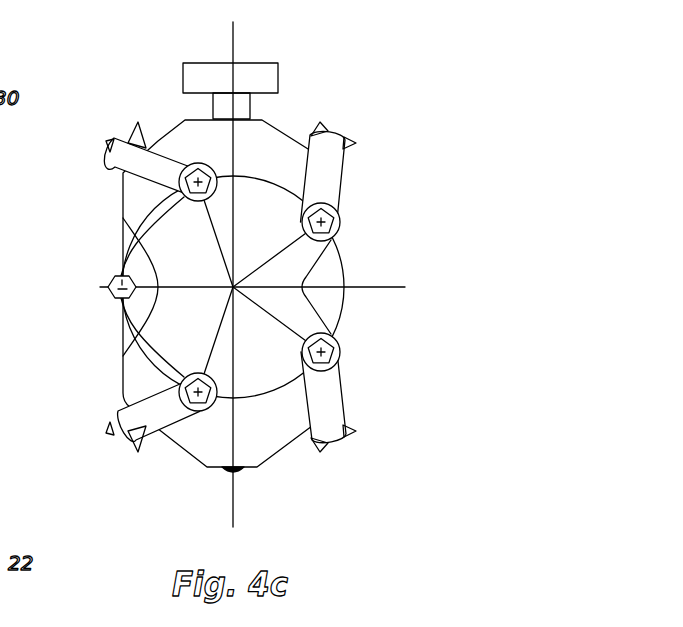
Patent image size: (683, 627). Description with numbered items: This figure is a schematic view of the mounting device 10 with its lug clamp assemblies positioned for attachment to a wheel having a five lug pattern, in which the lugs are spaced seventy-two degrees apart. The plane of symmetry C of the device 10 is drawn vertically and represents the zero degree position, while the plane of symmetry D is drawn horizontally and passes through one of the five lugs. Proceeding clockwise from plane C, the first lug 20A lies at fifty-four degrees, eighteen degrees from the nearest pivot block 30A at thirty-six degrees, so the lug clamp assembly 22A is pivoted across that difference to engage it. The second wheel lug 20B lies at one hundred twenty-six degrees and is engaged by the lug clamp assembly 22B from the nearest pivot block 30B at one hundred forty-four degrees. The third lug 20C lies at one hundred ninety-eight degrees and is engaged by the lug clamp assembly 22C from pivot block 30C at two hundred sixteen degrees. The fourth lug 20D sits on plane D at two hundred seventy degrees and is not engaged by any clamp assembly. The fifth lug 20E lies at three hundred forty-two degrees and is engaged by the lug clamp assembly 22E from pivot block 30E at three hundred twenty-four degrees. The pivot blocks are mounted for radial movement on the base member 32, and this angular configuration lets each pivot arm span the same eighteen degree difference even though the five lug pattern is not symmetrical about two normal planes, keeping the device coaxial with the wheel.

The mounting device 10 is at (342, 507).
The first lug 20A is at (340, 218).
The second wheel lug 20B is at (339, 347).
The third lug 20C is at (181, 386).
The fourth lug 20D is at (108, 296).
The fifth lug 20E is at (181, 197).
The lug clamp assembly 22A is at (355, 172).
The lug clamp assembly 22B is at (353, 388).
The lug clamp assembly 22C is at (158, 440).
The lug clamp assembly 22E is at (160, 135).
The pivot block 30A is at (349, 131).
The pivot block 30B is at (352, 433).
The pivot block 30C is at (110, 428).
The pivot block 30E is at (110, 143).
The base member 32 is at (250, 469).
The plane of symmetry C is at (233, 33).
The plane of symmetry D is at (382, 286).